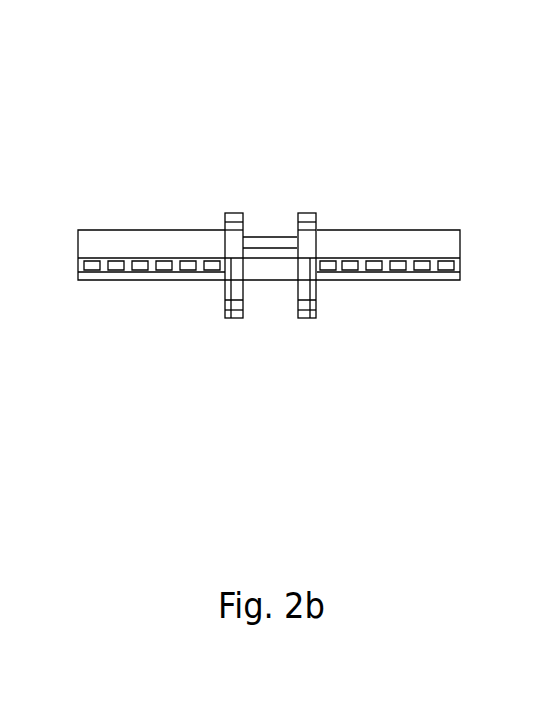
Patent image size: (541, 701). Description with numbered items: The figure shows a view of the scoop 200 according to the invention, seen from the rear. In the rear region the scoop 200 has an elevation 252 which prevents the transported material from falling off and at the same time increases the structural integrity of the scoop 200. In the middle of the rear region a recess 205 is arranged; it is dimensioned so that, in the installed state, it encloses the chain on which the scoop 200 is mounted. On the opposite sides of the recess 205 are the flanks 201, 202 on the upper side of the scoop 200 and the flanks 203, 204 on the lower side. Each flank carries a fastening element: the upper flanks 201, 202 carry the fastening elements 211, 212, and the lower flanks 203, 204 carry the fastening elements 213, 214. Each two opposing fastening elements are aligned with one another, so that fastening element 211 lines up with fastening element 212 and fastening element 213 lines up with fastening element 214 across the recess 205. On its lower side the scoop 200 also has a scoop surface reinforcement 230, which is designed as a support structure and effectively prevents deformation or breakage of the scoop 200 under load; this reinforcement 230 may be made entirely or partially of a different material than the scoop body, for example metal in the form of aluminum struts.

The scoop 200 is at (270, 200).
The flank 201 is at (232, 215).
The flank 202 is at (305, 216).
The flank 203 is at (233, 320).
The flank 204 is at (303, 318).
The recess 205 is at (269, 236).
The fastening element 211 is at (226, 228).
The fastening element 212 is at (318, 228).
The fastening element 213 is at (226, 298).
The fastening element 214 is at (313, 298).
The scoop surface reinforcement 230 is at (100, 243).
The elevation 252 is at (100, 265).